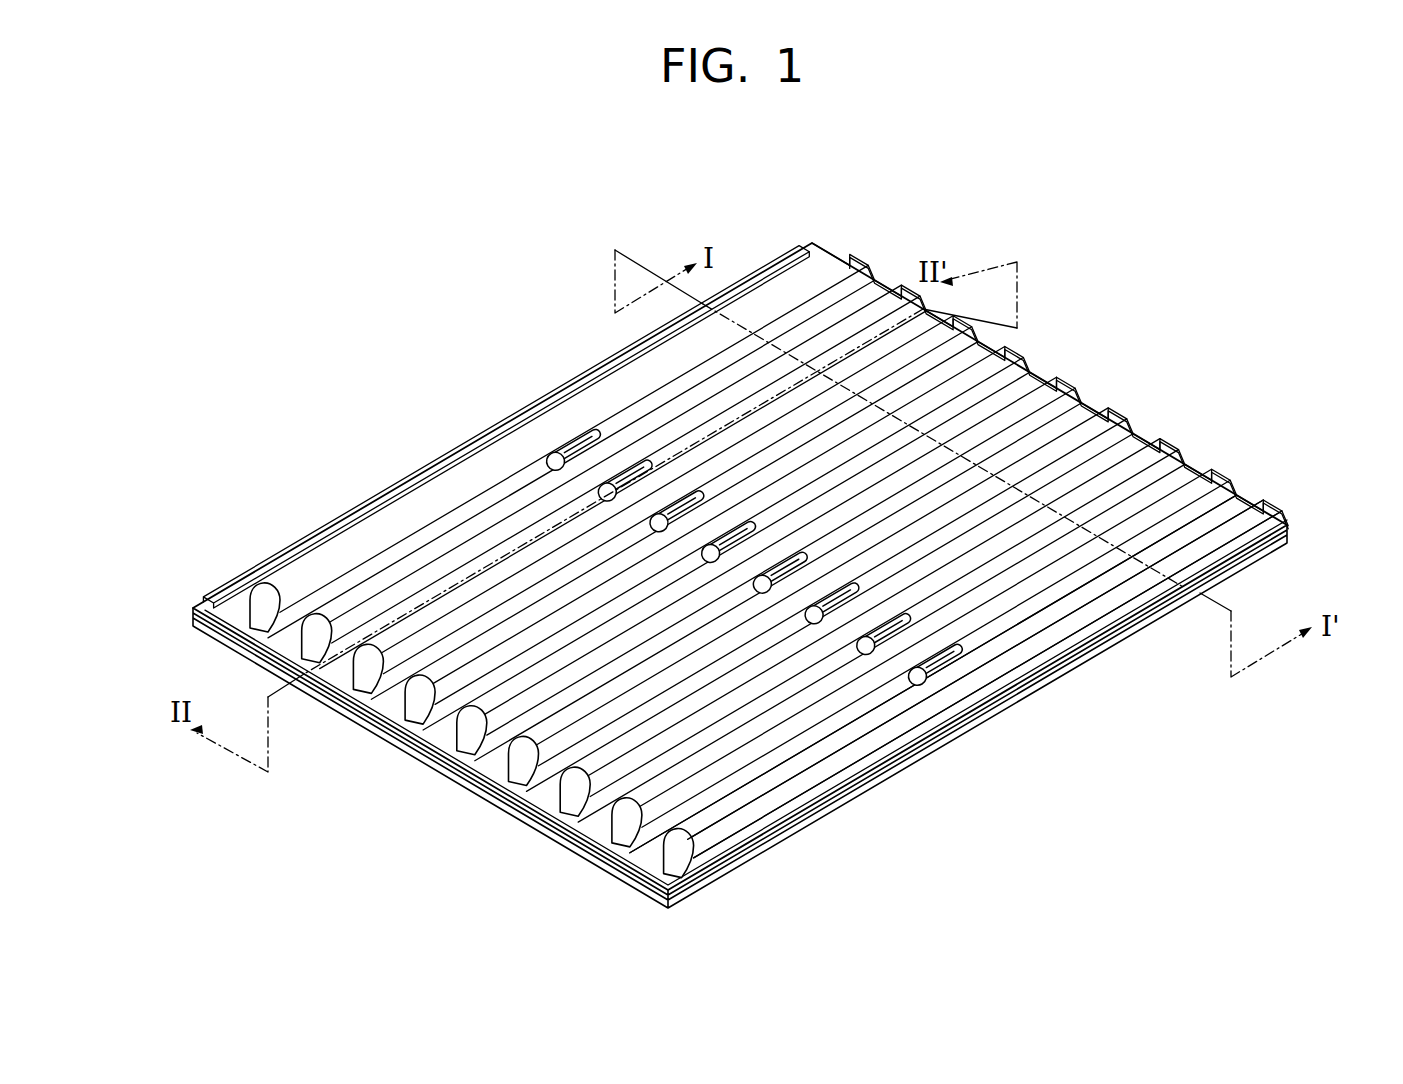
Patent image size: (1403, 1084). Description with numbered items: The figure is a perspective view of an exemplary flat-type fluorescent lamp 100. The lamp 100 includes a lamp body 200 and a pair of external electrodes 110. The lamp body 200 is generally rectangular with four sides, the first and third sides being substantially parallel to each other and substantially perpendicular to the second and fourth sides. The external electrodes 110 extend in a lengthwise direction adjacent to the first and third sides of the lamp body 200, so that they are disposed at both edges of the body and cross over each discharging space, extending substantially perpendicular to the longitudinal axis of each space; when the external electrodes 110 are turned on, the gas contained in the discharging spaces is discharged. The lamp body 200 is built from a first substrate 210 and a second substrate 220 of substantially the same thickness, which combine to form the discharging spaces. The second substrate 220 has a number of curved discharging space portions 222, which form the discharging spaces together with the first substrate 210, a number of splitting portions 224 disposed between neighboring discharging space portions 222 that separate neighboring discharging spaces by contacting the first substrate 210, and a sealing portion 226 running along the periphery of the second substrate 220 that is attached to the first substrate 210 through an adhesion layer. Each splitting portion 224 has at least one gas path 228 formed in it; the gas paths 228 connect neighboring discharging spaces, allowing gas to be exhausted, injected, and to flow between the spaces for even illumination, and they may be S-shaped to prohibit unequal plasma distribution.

The flat-type fluorescent lamp 100 is at (718, 171).
The external electrodes 110 is at (390, 695).
The lamp body 200 is at (464, 410).
The first substrate 210 is at (967, 730).
The second substrate 220 is at (1017, 690).
The discharging space portions 222 is at (870, 742).
The splitting portions 224 is at (775, 758).
The sealing portion 226 is at (752, 830).
The gas paths 228 is at (580, 448).